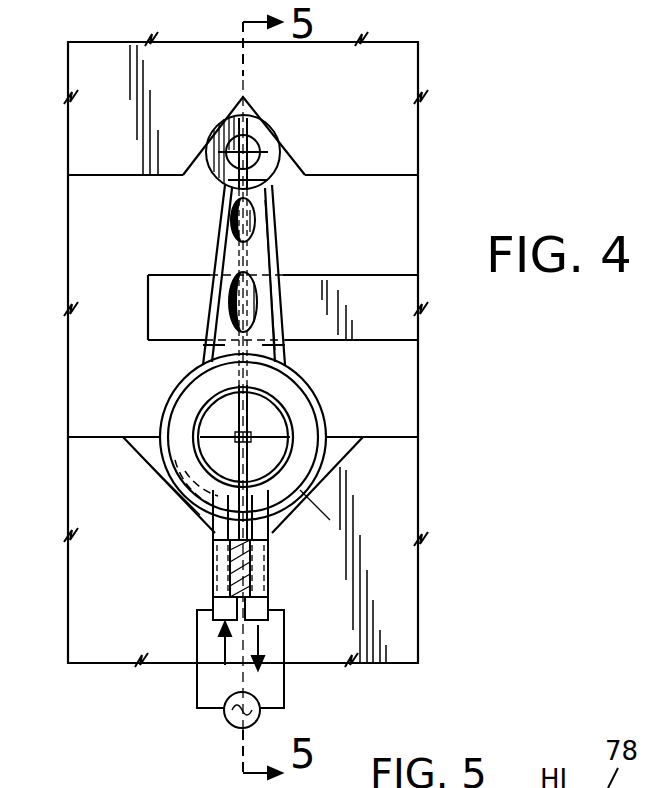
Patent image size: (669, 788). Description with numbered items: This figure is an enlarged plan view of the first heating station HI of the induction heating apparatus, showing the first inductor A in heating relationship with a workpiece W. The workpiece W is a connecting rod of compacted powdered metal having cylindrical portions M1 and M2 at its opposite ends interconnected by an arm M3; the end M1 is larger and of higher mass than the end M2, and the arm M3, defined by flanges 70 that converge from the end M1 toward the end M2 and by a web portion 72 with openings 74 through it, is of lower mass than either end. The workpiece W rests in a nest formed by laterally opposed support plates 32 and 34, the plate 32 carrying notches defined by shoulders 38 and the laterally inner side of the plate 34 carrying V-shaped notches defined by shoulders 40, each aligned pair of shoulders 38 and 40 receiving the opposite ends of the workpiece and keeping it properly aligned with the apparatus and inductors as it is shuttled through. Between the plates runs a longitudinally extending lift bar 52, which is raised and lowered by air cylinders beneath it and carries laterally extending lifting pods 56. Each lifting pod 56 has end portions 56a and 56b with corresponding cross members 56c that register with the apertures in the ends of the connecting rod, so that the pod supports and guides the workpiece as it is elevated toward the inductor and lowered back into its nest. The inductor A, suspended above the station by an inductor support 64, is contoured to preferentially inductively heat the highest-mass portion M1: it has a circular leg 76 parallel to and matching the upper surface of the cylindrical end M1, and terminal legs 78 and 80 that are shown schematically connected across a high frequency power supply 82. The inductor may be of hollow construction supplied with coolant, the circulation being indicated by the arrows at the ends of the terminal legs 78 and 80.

The support plate 34 is at (418, 66).
The shoulders 40 is at (303, 169).
The cylindrical portion M2 is at (270, 182).
The end portion 56b is at (262, 140).
The lifting pod 56 is at (235, 310).
The cross members 56c is at (268, 143).
The web portion 72 is at (230, 258).
The workpiece W is at (222, 247).
The arm M3 is at (276, 246).
The openings 74 is at (236, 222).
The lift bar 52 is at (400, 330).
The flanges 70 is at (208, 350).
The cylindrical portion M1 is at (175, 400).
The circular leg 76 is at (178, 420).
The end portion 56a is at (250, 427).
The shoulders 38 is at (345, 450).
The support plate 32 is at (398, 582).
The inductor A is at (310, 476).
The heating station HI is at (162, 492).
The inductor supports 64 is at (262, 560).
The terminal leg 78 is at (213, 578).
The terminal leg 80 is at (267, 590).
The high frequency power supply 82 is at (228, 722).